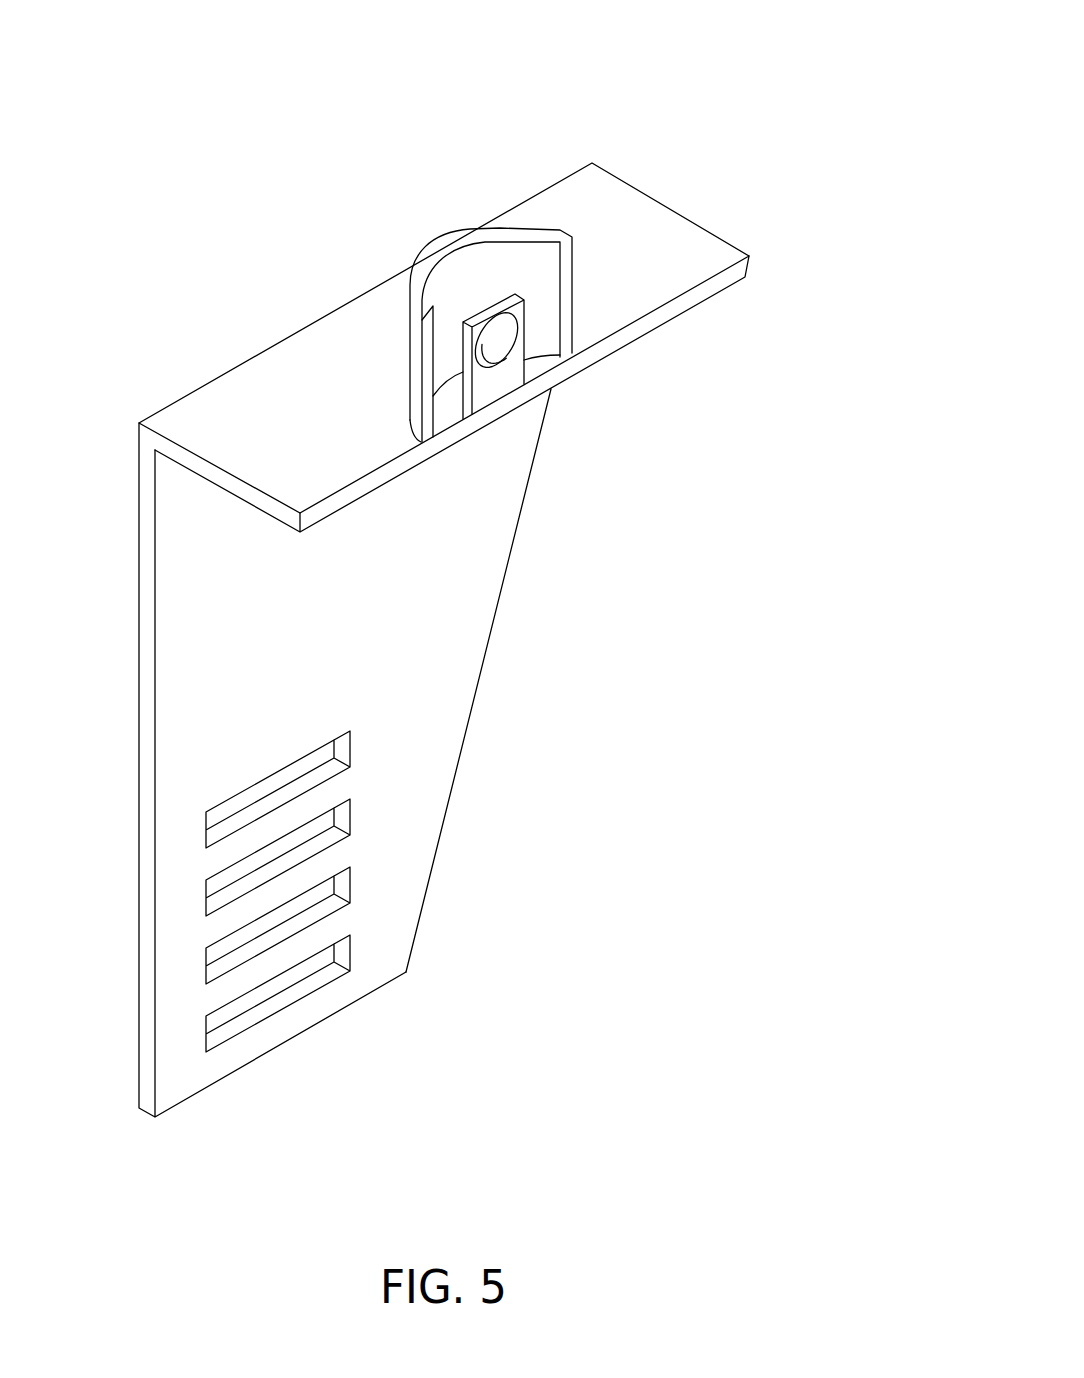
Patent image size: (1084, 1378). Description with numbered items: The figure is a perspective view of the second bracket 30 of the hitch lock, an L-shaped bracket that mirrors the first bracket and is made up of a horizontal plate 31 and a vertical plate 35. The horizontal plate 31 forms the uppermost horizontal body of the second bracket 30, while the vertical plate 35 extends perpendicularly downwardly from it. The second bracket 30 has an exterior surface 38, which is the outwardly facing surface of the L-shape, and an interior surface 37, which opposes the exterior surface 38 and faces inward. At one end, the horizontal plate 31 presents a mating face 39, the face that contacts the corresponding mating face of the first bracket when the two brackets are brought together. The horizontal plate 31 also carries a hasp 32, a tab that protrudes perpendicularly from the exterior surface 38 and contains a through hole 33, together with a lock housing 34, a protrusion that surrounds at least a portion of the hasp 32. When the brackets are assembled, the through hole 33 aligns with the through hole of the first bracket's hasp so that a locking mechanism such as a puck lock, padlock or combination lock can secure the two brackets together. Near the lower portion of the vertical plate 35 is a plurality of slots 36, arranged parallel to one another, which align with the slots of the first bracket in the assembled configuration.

The second bracket 30 is at (748, 65).
The horizontal plate 31 is at (572, 190).
The hasp 32 is at (483, 392).
The through hole 33 is at (497, 362).
The lock housing 34 is at (553, 340).
The vertical plate 35 is at (430, 832).
The slots 36 is at (218, 818).
The interior surface 37 is at (457, 702).
The exterior surface 38 is at (220, 397).
The mating face 39 is at (726, 279).